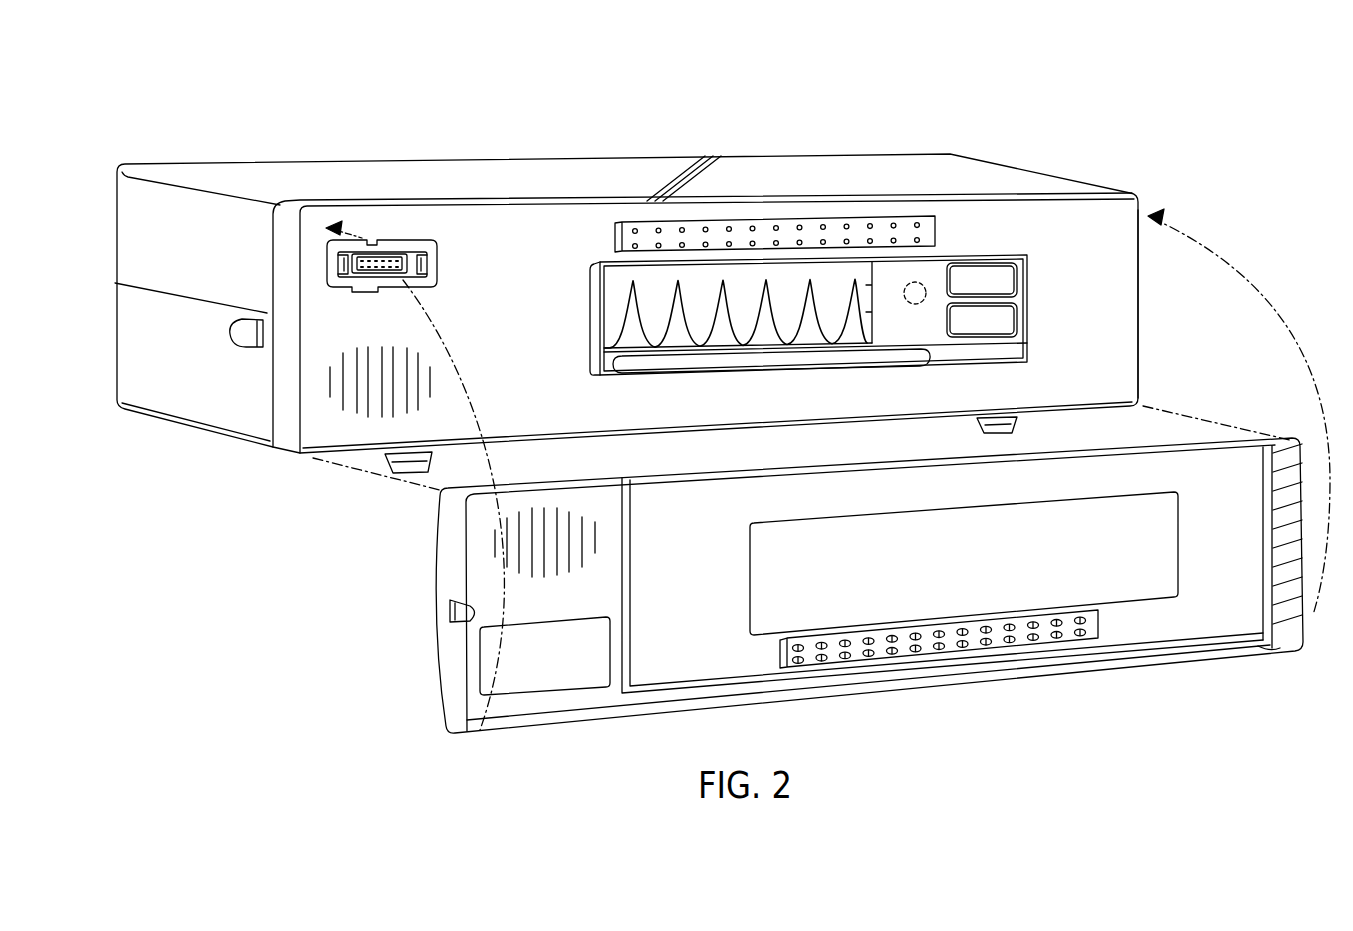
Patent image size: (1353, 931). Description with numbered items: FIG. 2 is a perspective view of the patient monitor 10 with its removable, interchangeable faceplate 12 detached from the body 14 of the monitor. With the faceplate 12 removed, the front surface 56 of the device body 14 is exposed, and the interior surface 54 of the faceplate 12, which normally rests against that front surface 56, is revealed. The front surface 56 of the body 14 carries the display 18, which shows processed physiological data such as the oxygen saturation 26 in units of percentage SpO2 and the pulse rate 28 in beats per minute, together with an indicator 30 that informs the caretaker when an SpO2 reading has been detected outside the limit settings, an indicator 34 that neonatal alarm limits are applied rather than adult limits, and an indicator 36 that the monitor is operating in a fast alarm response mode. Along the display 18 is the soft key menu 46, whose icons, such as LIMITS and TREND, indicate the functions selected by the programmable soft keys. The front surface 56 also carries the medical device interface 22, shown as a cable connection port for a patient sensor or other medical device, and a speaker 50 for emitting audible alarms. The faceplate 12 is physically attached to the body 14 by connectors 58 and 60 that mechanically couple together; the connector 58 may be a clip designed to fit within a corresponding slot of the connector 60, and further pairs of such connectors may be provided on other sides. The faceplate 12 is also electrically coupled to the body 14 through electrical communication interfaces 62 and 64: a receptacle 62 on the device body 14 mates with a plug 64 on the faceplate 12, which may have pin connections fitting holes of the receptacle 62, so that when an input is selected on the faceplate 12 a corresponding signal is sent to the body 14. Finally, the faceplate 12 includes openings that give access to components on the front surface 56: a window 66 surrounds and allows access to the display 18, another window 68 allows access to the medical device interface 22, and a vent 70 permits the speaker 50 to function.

The patient monitor 10 is at (481, 112).
The faceplate 12 is at (429, 632).
The body 14 is at (1015, 173).
The display 18 is at (603, 261).
The medical device interface 22 is at (387, 247).
The oxygen saturation 26 is at (980, 260).
The pulse rate 28 is at (1017, 315).
The indicator 30 is at (903, 288).
The indicator 34 is at (1017, 358).
The indicator 36 is at (967, 357).
The soft key menu 46 is at (613, 364).
The speaker 50 is at (383, 415).
The interior surface 54 is at (1263, 636).
The front surface 56 is at (1110, 312).
The connector 58 is at (455, 612).
The connector 60 is at (243, 338).
The electrical communication interface 62 is at (940, 229).
The electrical communication interface 64 is at (1100, 623).
The window 66 is at (750, 573).
The window 68 is at (480, 650).
The vent 70 is at (545, 507).